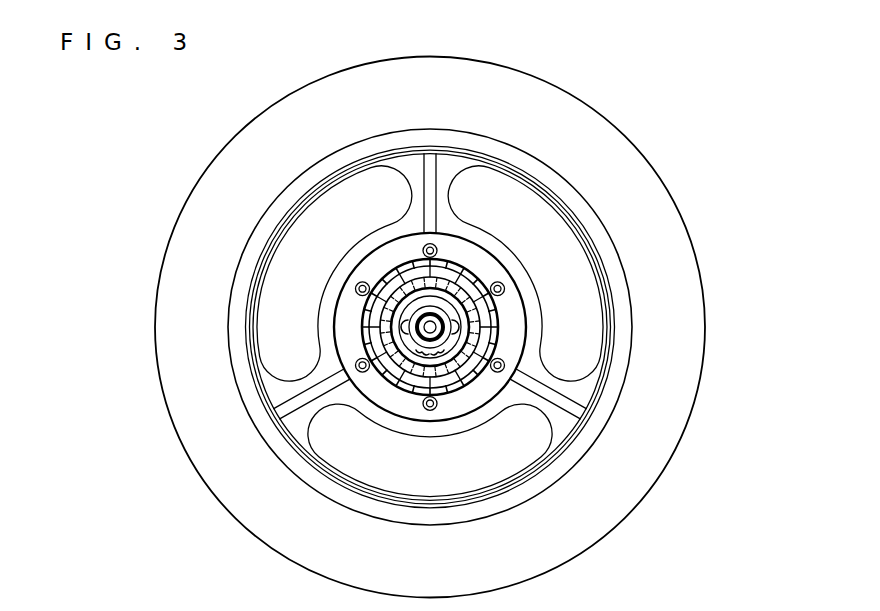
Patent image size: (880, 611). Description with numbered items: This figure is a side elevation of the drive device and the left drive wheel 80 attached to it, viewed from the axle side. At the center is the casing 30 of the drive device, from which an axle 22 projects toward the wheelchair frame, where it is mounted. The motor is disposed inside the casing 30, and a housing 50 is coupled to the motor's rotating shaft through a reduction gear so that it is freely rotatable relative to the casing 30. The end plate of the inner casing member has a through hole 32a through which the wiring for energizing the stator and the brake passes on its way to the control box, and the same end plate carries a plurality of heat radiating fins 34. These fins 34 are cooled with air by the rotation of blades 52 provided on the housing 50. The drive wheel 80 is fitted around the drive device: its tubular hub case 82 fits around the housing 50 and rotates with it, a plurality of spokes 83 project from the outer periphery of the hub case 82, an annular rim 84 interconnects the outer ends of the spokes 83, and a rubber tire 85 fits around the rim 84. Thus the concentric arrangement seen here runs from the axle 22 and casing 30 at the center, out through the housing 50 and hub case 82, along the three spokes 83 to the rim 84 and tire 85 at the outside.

The drive wheel 80 is at (733, 118).
The hub case 82 is at (463, 243).
The spokes 83 is at (440, 190).
The rim 84 is at (540, 182).
The tire 85 is at (630, 183).
The casing 30 is at (458, 310).
The through hole 32a is at (415, 262).
The heat radiating fins 34 is at (395, 388).
The housing 50 is at (438, 347).
The blades 52 is at (478, 340).
The axle 22 is at (463, 350).